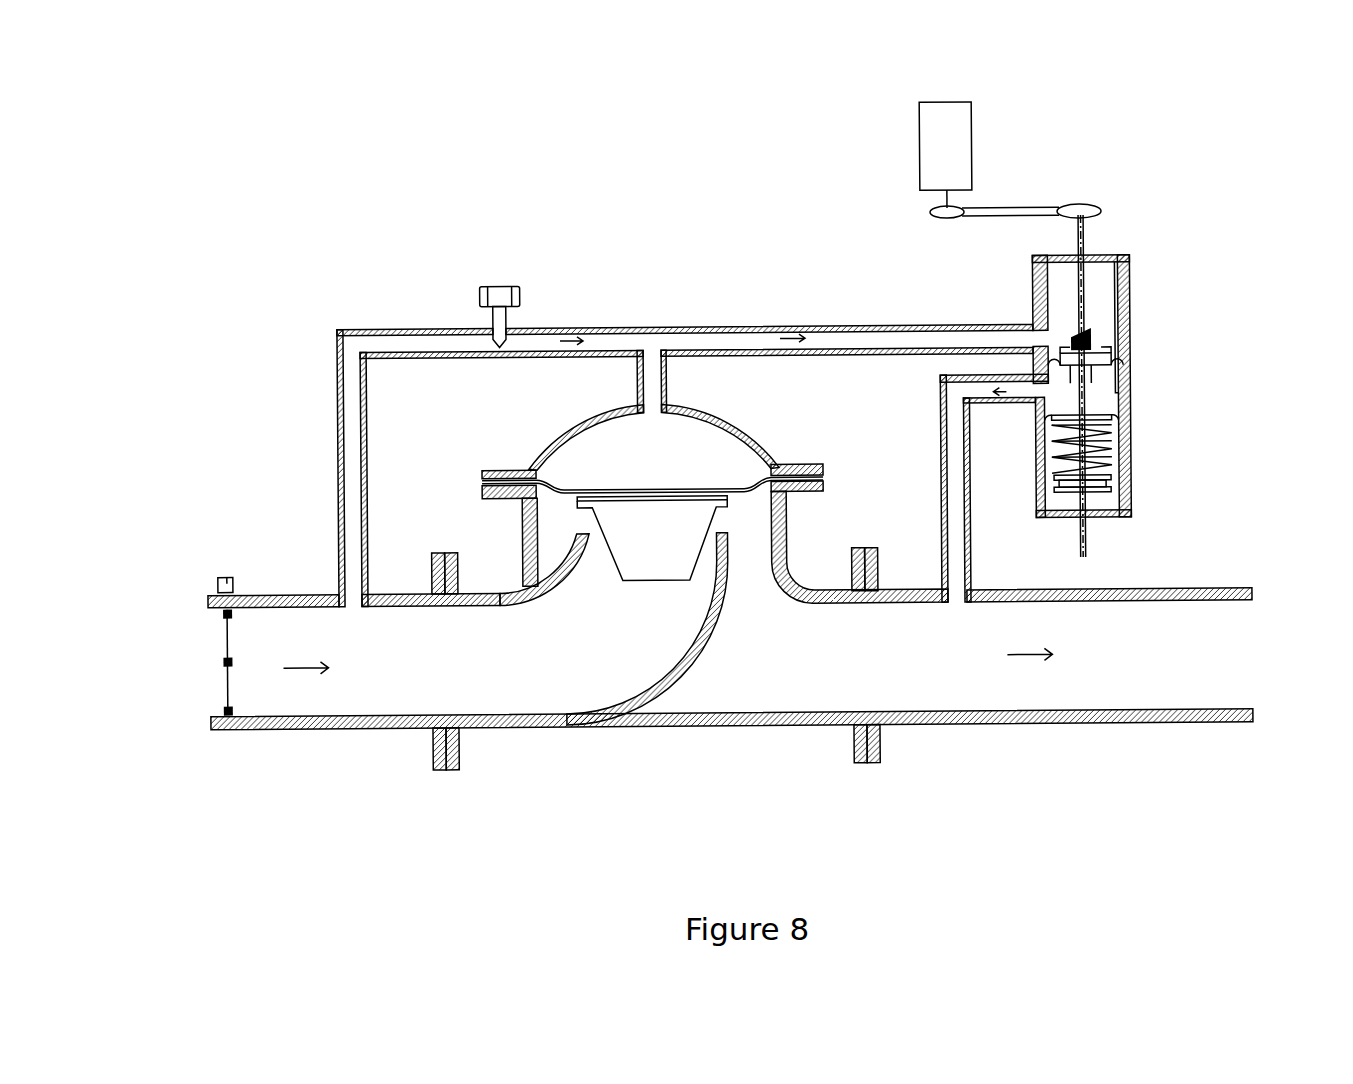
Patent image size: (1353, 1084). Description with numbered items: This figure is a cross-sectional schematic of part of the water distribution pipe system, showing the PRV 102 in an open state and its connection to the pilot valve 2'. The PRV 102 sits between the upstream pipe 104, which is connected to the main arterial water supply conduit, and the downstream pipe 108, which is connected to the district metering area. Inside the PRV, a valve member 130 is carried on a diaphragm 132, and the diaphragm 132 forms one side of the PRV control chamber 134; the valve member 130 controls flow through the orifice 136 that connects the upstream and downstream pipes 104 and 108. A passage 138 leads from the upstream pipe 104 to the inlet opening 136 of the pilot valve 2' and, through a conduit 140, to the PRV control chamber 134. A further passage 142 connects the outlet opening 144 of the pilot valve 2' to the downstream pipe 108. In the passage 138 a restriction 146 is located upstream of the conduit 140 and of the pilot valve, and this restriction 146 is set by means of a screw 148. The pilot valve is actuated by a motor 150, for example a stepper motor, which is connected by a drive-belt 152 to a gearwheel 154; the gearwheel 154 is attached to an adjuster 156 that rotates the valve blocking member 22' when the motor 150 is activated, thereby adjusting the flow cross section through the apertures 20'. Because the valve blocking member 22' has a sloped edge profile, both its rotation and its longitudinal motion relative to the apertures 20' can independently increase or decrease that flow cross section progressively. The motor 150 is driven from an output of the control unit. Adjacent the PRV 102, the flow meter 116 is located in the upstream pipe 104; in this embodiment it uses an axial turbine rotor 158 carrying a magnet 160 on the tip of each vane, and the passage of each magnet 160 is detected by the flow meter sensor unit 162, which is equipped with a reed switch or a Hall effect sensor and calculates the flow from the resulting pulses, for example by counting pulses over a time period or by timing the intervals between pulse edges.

The PRV 102 is at (778, 416).
The upstream pipe 104 is at (380, 692).
The downstream pipe 108 is at (1193, 694).
The flow meter 116 is at (266, 562).
The valve member 130 is at (653, 545).
The diaphragm 132 is at (560, 483).
The PRV control chamber 134 is at (622, 437).
The orifice 136 is at (725, 522).
The passage 138 is at (348, 371).
The conduit 140 is at (652, 372).
The passage 142 is at (957, 574).
The outlet opening 144 is at (1037, 395).
The restriction 146 is at (493, 346).
The screw 148 is at (487, 281).
The motor 150 is at (945, 160).
The drive-belt 152 is at (993, 209).
The gearwheel 154 is at (1090, 210).
The adjuster 156 is at (1080, 246).
The axial turbine rotor 158 is at (227, 679).
The magnet 160 is at (223, 611).
The flow meter sensor unit 162 is at (225, 574).
The pilot valve 2' is at (1134, 352).
The apertures 20' is at (1154, 343).
The valve blocking member 22' is at (1165, 366).